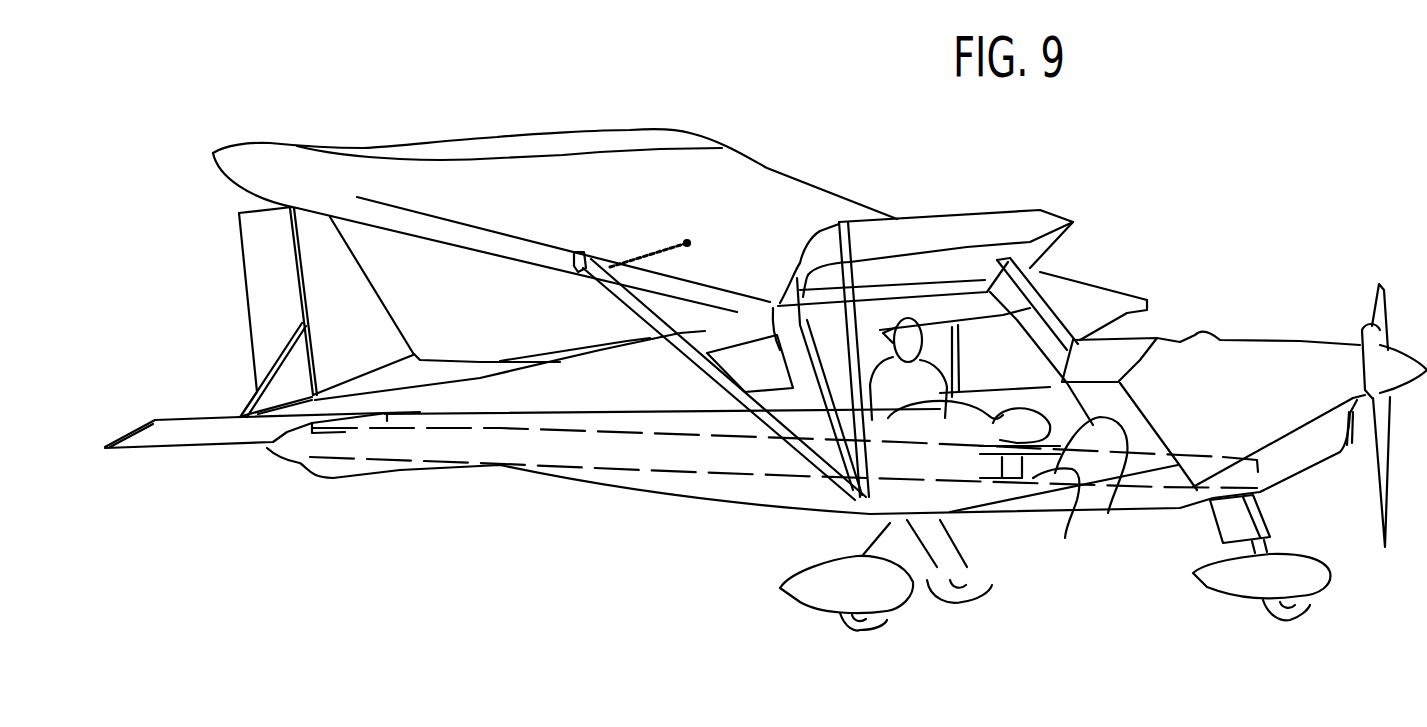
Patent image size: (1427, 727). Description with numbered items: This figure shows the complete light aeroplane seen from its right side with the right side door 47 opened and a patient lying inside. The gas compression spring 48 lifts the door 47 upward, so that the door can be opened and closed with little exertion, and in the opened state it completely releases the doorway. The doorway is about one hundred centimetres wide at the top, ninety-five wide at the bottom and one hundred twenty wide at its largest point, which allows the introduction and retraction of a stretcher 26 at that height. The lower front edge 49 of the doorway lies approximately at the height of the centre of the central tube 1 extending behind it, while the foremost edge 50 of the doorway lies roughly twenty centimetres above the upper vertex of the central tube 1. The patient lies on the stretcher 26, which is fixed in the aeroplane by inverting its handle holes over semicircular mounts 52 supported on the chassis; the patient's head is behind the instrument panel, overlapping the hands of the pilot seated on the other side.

The central tube 1 is at (418, 442).
The stretcher 26 is at (1008, 465).
The right side door 47 is at (977, 230).
The gas compression spring 48 is at (765, 322).
The lower front edge of the doorway 49 is at (1074, 521).
The foremost edge of the doorway 50 is at (1108, 513).
The semicircular mount 52 is at (1034, 479).